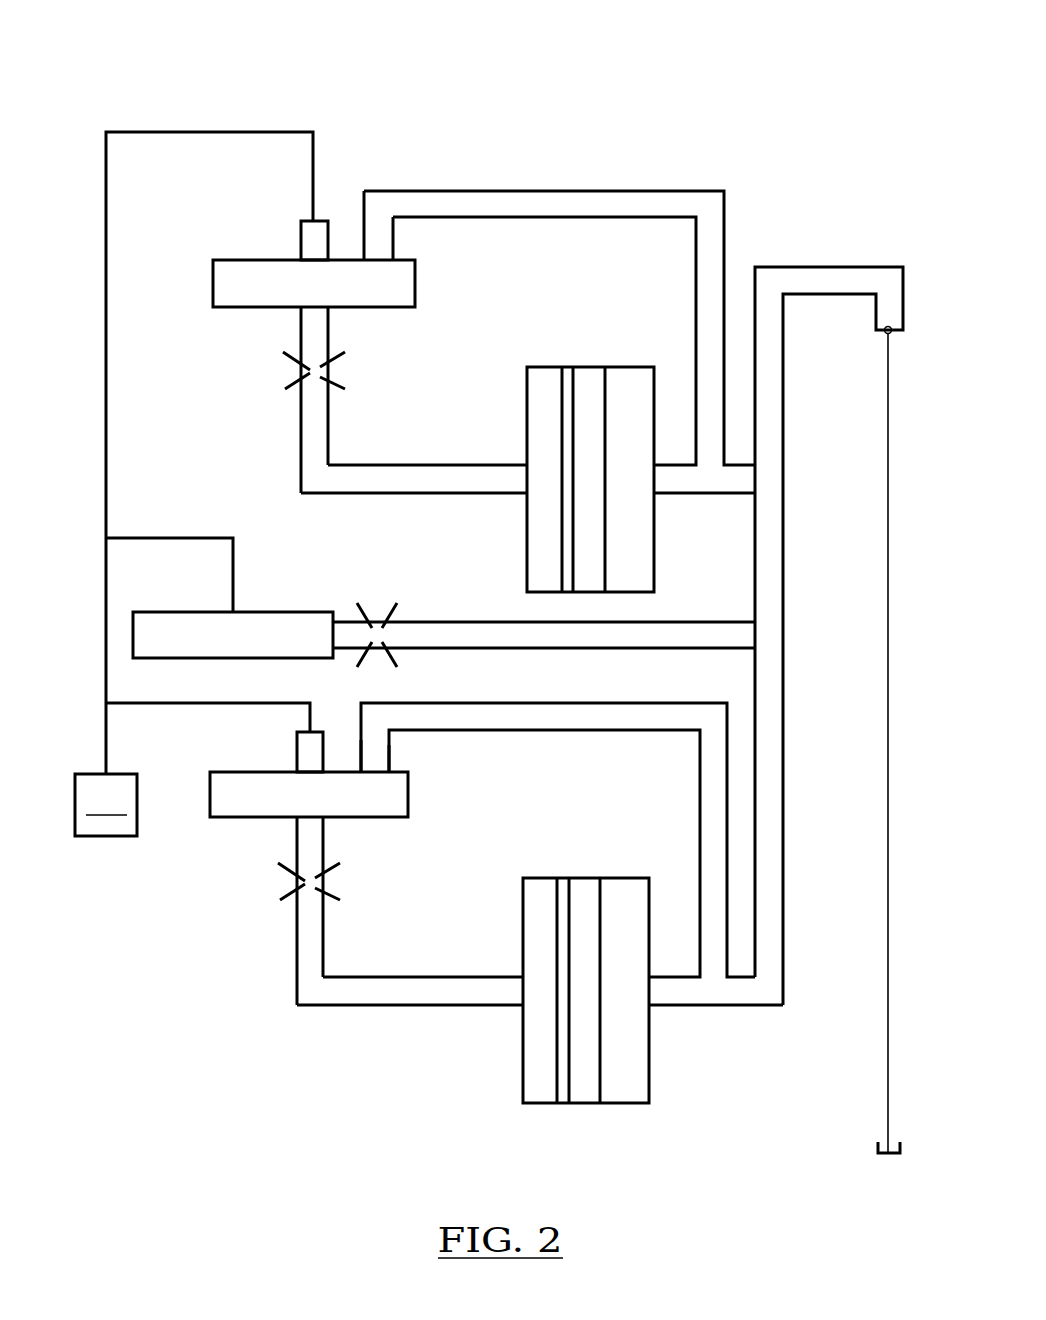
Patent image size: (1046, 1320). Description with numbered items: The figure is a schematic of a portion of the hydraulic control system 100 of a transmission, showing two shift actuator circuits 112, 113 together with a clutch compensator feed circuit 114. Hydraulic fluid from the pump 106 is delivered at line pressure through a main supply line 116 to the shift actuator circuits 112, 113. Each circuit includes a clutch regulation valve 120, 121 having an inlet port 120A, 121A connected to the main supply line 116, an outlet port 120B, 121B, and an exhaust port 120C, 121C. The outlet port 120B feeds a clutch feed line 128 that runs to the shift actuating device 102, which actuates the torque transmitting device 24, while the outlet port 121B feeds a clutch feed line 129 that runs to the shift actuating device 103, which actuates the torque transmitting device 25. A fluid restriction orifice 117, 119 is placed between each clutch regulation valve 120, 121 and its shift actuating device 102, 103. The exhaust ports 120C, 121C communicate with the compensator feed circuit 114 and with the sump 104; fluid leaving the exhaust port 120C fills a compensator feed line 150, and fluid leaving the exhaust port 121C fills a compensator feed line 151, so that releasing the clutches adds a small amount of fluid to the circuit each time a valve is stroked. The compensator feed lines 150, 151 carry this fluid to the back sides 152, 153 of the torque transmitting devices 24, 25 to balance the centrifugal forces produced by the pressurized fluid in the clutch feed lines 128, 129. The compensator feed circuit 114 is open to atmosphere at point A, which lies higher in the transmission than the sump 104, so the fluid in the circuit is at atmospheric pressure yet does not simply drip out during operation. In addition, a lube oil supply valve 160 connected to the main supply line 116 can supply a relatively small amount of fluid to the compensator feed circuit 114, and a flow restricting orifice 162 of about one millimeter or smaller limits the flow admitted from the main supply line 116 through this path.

The hydraulic control system 100 is at (192, 62).
The main supply line 116 is at (276, 132).
The clutch regulation valve 120 is at (205, 290).
The inlet port 120A is at (315, 259).
The outlet port 120B is at (316, 306).
The exhaust port 120C is at (382, 260).
The compensator feed line 150 is at (506, 190).
The clutch compensator feed circuit 114 is at (636, 182).
The fluid restriction orifice 117 is at (290, 388).
The shift actuator circuit 112 is at (294, 453).
The clutch feed line 128 is at (356, 494).
The shift actuating device 102 is at (566, 445).
The torque transmitting device 24 is at (588, 379).
The back side 152 is at (605, 410).
The point A is at (890, 334).
The sump 104 is at (884, 1156).
The lube oil supply valve 160 is at (158, 635).
The flow restricting orifice 162 is at (393, 658).
The compensator feed line 151 is at (587, 714).
The clutch regulation valve 121 is at (200, 800).
The inlet port 121A is at (308, 772).
The outlet port 121B is at (310, 817).
The exhaust port 121C is at (377, 772).
The pump 106 is at (106, 805).
The fluid restriction orifice 119 is at (288, 903).
The shift actuator circuit 113 is at (290, 968).
The clutch feed line 129 is at (338, 1006).
The shift actuating device 103 is at (553, 969).
The torque transmitting device 25 is at (582, 887).
The back side 153 is at (600, 917).